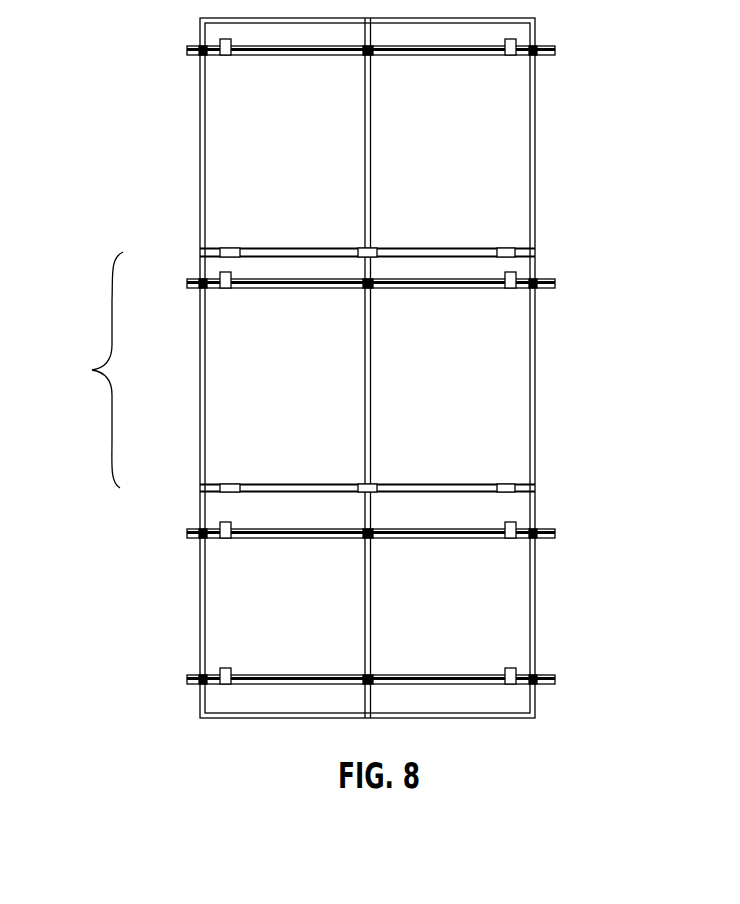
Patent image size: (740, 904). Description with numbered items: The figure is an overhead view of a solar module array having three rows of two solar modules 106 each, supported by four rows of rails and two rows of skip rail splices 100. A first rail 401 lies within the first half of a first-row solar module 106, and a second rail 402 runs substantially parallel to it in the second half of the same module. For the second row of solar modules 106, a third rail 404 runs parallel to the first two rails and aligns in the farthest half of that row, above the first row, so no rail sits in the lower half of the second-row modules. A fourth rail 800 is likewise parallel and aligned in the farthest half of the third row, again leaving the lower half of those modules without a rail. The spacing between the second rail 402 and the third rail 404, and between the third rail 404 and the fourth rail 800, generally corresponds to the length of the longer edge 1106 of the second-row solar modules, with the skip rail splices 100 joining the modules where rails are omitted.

The skip rail splice 100 is at (217, 235).
The solar module 106 is at (200, 130).
The first rail 401 is at (550, 702).
The second rail 402 is at (550, 554).
The third rail 404 is at (550, 308).
The fourth rail 800 is at (550, 74).
The longer edge 1106 is at (92, 370).